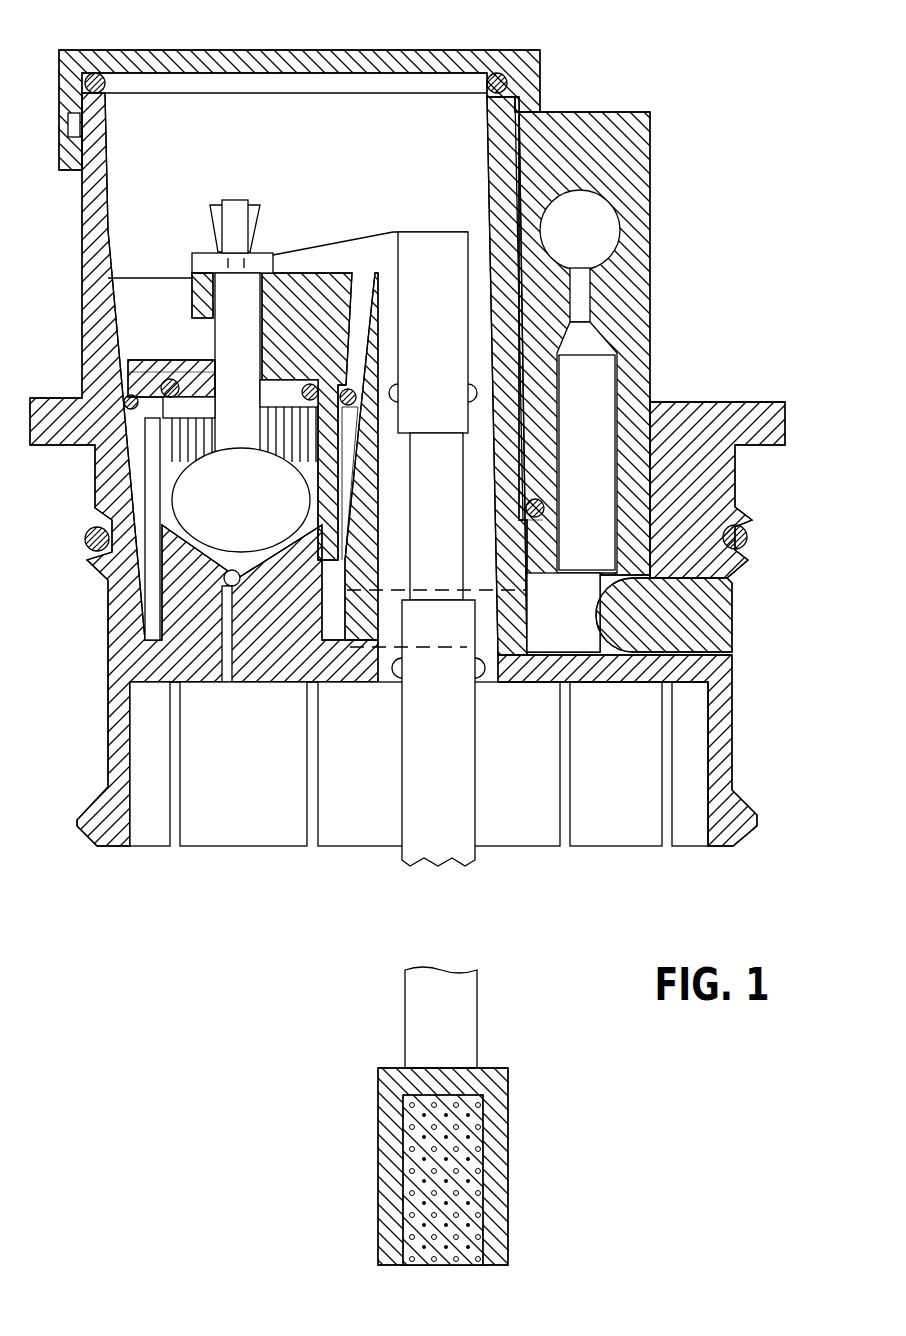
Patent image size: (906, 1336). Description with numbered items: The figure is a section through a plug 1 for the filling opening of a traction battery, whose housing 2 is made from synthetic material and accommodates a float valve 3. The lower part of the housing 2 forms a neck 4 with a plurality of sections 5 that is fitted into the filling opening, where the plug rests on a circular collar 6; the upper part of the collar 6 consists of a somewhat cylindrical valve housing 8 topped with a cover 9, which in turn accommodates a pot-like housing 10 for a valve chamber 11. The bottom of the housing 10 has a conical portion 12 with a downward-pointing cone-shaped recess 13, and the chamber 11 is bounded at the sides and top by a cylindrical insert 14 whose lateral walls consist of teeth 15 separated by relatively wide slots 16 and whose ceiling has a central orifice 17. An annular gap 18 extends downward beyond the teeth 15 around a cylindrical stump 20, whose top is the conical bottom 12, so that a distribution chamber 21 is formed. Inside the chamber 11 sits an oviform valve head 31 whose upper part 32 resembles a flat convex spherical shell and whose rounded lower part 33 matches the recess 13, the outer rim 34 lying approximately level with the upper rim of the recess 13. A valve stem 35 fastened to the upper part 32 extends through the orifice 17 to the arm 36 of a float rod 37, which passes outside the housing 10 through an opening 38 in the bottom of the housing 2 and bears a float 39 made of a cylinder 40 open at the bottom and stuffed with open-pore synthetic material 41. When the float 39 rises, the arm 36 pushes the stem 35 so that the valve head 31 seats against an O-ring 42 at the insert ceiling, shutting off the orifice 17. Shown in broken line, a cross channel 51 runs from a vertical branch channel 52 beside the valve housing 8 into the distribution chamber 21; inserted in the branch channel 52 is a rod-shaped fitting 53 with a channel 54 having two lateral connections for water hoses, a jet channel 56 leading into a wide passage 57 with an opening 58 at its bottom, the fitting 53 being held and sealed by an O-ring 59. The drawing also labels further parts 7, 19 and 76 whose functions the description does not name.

The plug 1 is at (775, 340).
The plug housing 2 is at (740, 507).
The float valve 3 is at (355, 195).
The neck 4 is at (740, 755).
The sections 5 is at (197, 850).
The collar 6 is at (760, 428).
The housing 7 is at (690, 398).
The valve housing 8 is at (85, 220).
The cover 9 is at (448, 58).
The pot-like housing 10 is at (372, 306).
The valve chamber 11 is at (195, 401).
The conical portion 12 is at (228, 634).
The recess 13 is at (132, 577).
The cylindrical insert 14 is at (128, 372).
The teeth 15 is at (148, 517).
The slots 16 is at (174, 460).
The central orifice 17 is at (218, 348).
The annular gap 18 is at (102, 555).
The sealing ring 19 is at (124, 402).
The cylindrical stump 20 is at (156, 684).
The distribution chamber 21 is at (303, 670).
The valve head 31 is at (306, 502).
The upper part of the valve head 32 is at (338, 452).
The lower part of the valve head 33 is at (338, 522).
The outer rim 34 is at (338, 507).
The valve stem 35 is at (262, 268).
The arm 36 is at (320, 248).
The float rod 37 is at (420, 852).
The opening 38 is at (386, 682).
The float 39 is at (528, 1090).
The cylinder 40 is at (500, 1150).
The open-pore synthetic material 41 is at (470, 1190).
The O-ring 42 is at (162, 380).
The cross channel 51 is at (493, 627).
The branch channel 52 is at (732, 578).
The rod-shaped fitting 53 is at (630, 142).
The channel 54 is at (606, 222).
The jet channel 56 is at (598, 300).
The wide passage 57 is at (608, 370).
The opening 58 is at (587, 575).
The O-ring 59 is at (653, 480).
The sealing ring 76 is at (748, 537).